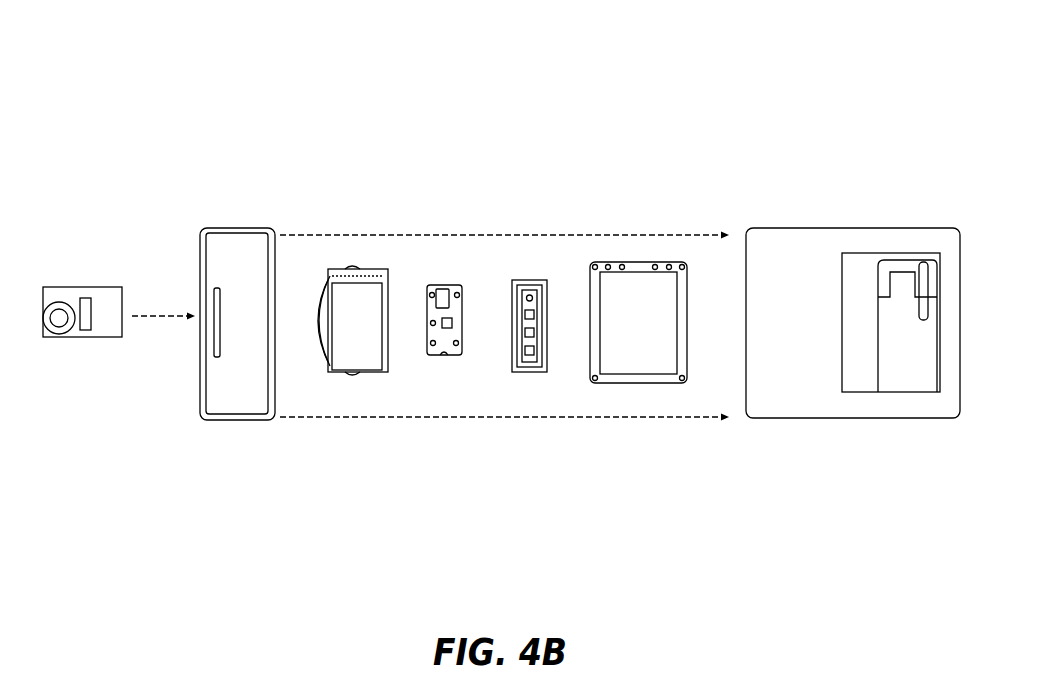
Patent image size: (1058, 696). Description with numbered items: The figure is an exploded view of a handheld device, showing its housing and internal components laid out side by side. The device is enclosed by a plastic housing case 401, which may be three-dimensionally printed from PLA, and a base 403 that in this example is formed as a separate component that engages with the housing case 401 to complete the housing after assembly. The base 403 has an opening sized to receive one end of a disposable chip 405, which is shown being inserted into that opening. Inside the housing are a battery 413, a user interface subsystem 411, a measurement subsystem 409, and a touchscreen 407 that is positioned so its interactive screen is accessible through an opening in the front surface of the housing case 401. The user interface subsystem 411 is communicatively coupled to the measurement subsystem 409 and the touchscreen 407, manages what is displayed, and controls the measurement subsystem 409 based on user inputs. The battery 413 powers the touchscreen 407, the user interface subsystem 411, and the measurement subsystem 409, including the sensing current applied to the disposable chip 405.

The plastic housing case 401 is at (864, 218).
The base 403 is at (235, 212).
The disposable chip 405 is at (87, 350).
The touchscreen 407 is at (635, 262).
The measurement subsystem 409 is at (531, 378).
The user interface subsystem 411 is at (443, 278).
The battery 413 is at (356, 392).